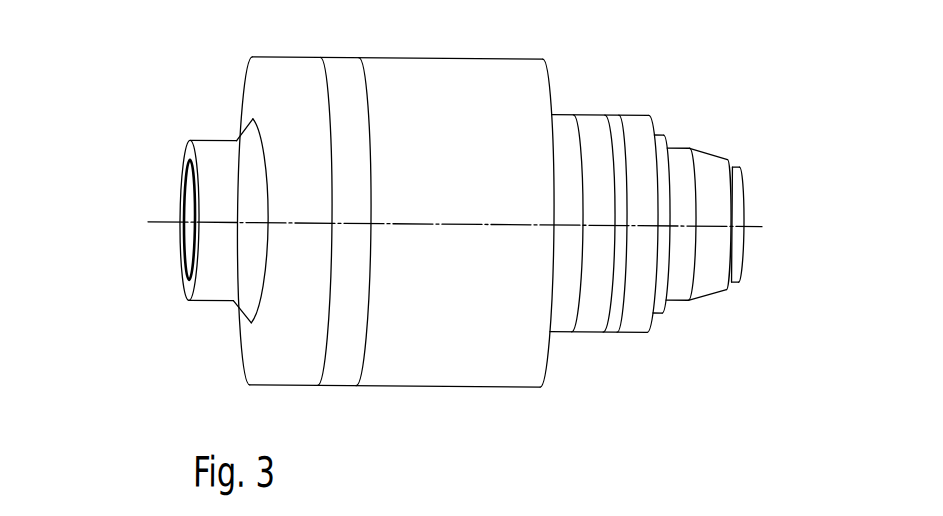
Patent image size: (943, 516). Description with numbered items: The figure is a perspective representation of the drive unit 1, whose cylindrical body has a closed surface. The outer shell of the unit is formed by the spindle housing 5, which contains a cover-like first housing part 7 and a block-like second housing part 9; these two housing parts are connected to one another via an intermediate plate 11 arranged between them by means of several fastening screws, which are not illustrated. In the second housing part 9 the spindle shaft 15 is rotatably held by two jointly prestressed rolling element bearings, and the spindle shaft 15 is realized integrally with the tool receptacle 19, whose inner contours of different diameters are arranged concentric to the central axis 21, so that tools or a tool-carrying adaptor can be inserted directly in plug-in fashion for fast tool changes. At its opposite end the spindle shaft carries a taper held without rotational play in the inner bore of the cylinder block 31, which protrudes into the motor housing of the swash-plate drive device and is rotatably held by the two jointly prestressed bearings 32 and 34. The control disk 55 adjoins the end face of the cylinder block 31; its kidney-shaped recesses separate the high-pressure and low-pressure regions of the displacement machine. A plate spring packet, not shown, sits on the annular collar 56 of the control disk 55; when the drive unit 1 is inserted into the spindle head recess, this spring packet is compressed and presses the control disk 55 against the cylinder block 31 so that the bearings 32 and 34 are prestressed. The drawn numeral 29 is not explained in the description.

The drive unit 1 is at (455, 408).
The spindle housing 5 is at (218, 110).
The first housing part 7 is at (310, 197).
The second housing part 9 is at (510, 363).
The intermediate plate 11 is at (342, 364).
The spindle shaft 15 is at (218, 280).
The tool receptacle 19 is at (190, 233).
The central axis 21 is at (753, 227).
The collar 29 is at (579, 101).
The cylinder block 31 is at (660, 303).
The bearing 32 is at (590, 313).
The bearing 34 is at (637, 322).
The control disk 55 is at (705, 178).
The annular collar 56 is at (733, 293).